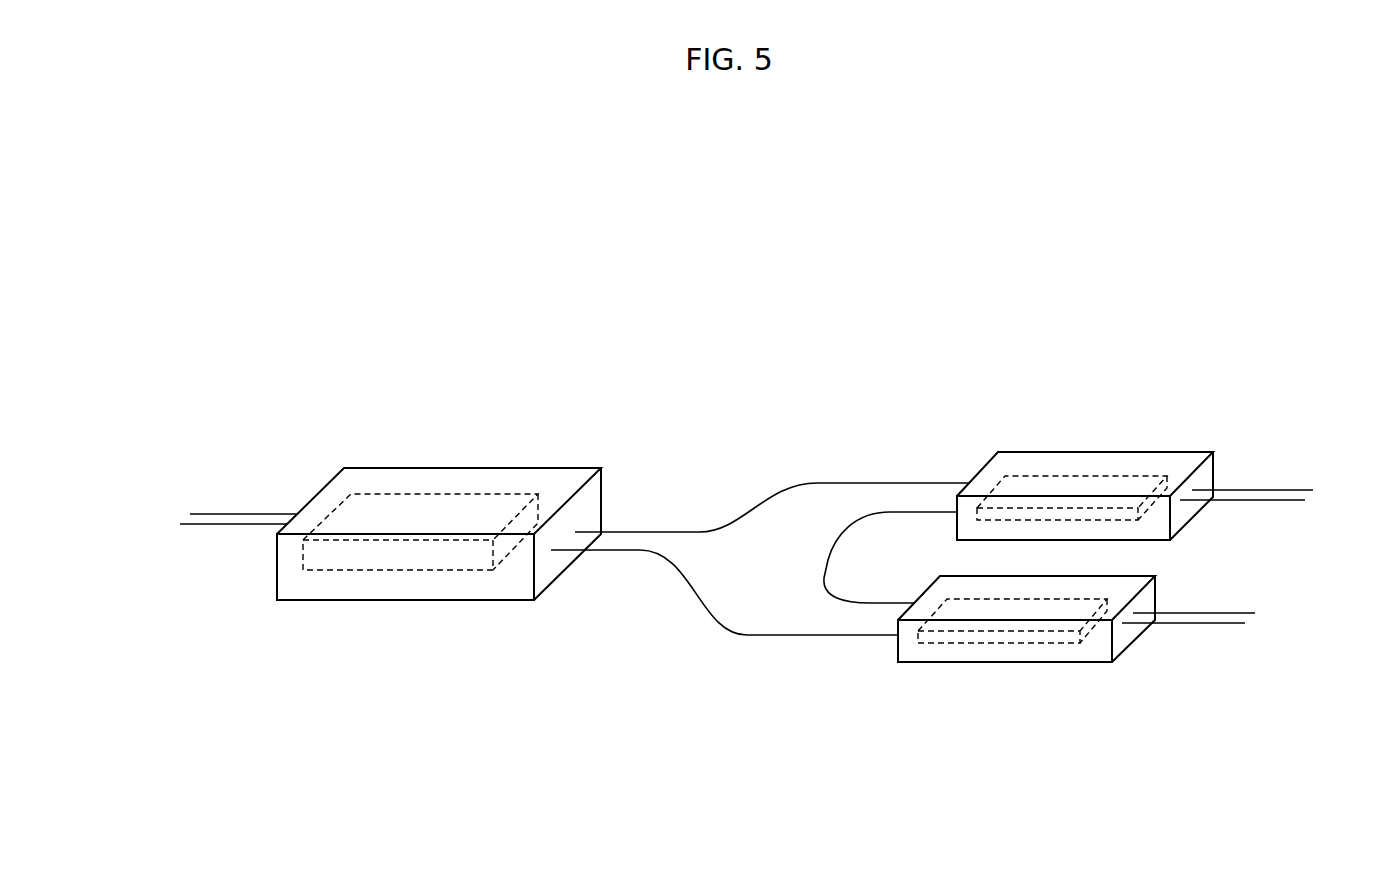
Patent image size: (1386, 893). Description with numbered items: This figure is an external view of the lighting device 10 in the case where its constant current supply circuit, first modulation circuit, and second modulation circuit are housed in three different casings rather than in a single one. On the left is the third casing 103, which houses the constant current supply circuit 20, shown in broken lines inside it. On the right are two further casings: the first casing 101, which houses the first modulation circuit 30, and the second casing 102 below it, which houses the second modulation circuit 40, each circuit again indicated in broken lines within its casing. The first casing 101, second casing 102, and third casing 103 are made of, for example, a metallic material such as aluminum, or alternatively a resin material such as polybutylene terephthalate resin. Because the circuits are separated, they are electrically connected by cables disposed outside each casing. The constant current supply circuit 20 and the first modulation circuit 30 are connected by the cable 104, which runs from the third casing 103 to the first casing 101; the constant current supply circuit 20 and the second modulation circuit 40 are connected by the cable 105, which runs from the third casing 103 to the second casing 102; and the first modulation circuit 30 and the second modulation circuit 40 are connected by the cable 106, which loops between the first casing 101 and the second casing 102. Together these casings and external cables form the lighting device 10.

The lighting device 10 is at (1130, 275).
The constant current supply circuit 20 is at (433, 503).
The first modulation circuit 30 is at (1070, 488).
The second modulation circuit 40 is at (992, 635).
The first casing 101 is at (1142, 463).
The second casing 102 is at (1100, 653).
The third casing 103 is at (533, 473).
The cable 104 is at (795, 488).
The cable 105 is at (747, 638).
The cable 106 is at (826, 557).